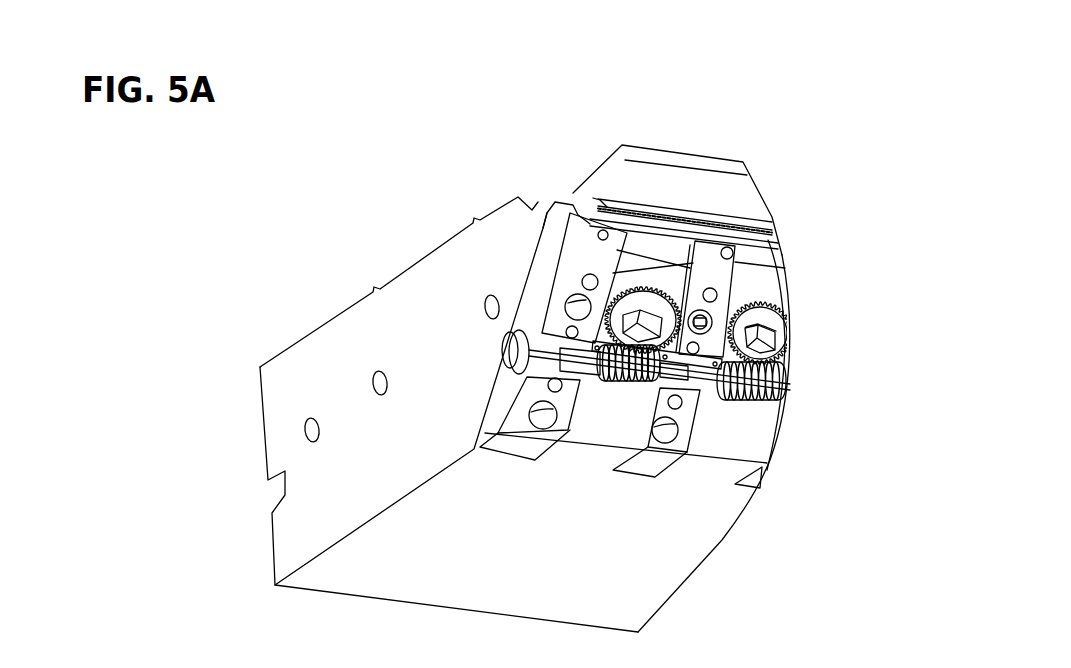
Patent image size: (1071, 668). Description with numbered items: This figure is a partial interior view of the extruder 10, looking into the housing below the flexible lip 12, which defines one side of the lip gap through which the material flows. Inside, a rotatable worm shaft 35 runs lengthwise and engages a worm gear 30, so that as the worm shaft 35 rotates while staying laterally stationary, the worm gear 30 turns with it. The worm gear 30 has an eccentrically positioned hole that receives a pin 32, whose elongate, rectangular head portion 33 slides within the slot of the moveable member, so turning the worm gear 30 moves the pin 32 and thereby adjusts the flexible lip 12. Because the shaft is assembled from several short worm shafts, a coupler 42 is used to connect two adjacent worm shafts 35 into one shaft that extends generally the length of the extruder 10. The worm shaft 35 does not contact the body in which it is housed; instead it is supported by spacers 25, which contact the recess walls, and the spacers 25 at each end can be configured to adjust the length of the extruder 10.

The extruder 10 is at (275, 283).
The flexible lip 12 is at (642, 157).
The spacers 25 is at (672, 447).
The worm gear 30 is at (772, 303).
The pin 32 is at (777, 343).
The head portion 33 is at (770, 328).
The worm shaft 35 is at (773, 385).
The coupler 42 is at (538, 363).